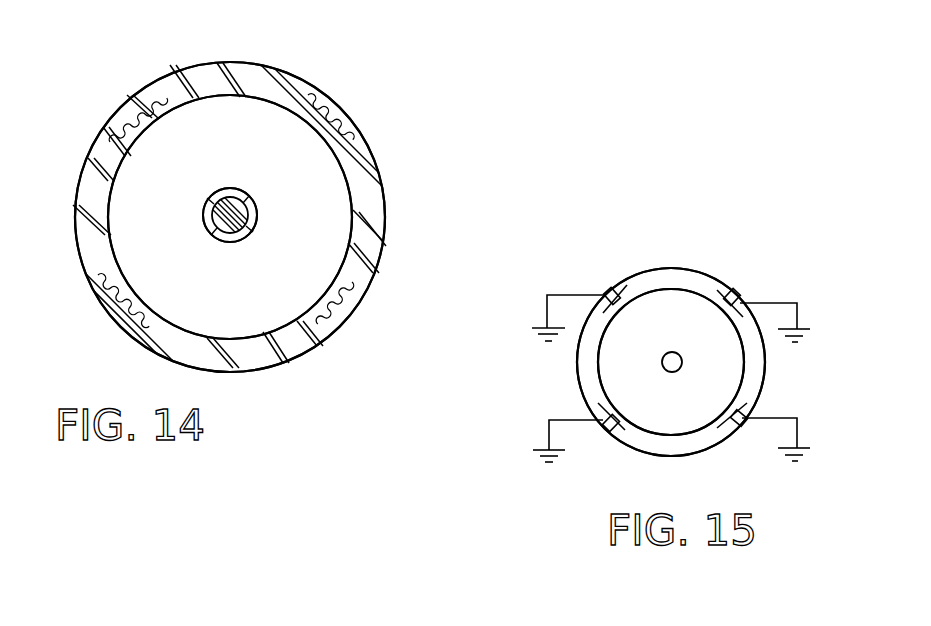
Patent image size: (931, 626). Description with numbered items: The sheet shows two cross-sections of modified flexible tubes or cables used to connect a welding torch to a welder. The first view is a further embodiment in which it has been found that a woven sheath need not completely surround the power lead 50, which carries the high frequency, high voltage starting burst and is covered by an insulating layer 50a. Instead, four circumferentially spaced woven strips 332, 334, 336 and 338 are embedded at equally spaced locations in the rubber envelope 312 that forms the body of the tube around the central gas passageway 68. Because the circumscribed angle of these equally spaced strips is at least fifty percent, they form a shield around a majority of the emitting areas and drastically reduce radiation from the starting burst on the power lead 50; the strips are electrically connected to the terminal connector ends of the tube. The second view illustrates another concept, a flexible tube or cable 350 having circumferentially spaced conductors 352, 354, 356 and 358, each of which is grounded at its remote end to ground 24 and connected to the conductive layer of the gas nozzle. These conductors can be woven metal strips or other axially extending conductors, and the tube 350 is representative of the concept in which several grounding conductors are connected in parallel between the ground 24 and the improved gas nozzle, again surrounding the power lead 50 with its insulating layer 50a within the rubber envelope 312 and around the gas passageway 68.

In FIG. 14, the rubber envelope 312 is at (232, 62).
In FIG. 15, the rubber envelope 312 is at (763, 375).
In FIG. 14, the strip 332 is at (120, 109).
In FIG. 14, the strip 334 is at (329, 110).
In FIG. 14, the strip 336 is at (340, 323).
In FIG. 14, the strip 338 is at (118, 322).
In FIG. 14, the gas passageway 68 is at (130, 258).
In FIG. 15, the gas passageway 68 is at (597, 370).
In FIG. 14, the power lead 50 is at (243, 190).
In FIG. 15, the power lead 50 is at (677, 357).
In FIG. 14, the insulating layer 50a is at (228, 241).
In FIG. 15, the flexible tube 350 is at (692, 268).
In FIG. 15, the conductor 352 is at (622, 283).
In FIG. 15, the conductor 354 is at (615, 432).
In FIG. 15, the conductor 356 is at (728, 433).
In FIG. 15, the conductor 358 is at (728, 291).
In FIG. 15, the ground 24 is at (533, 337).